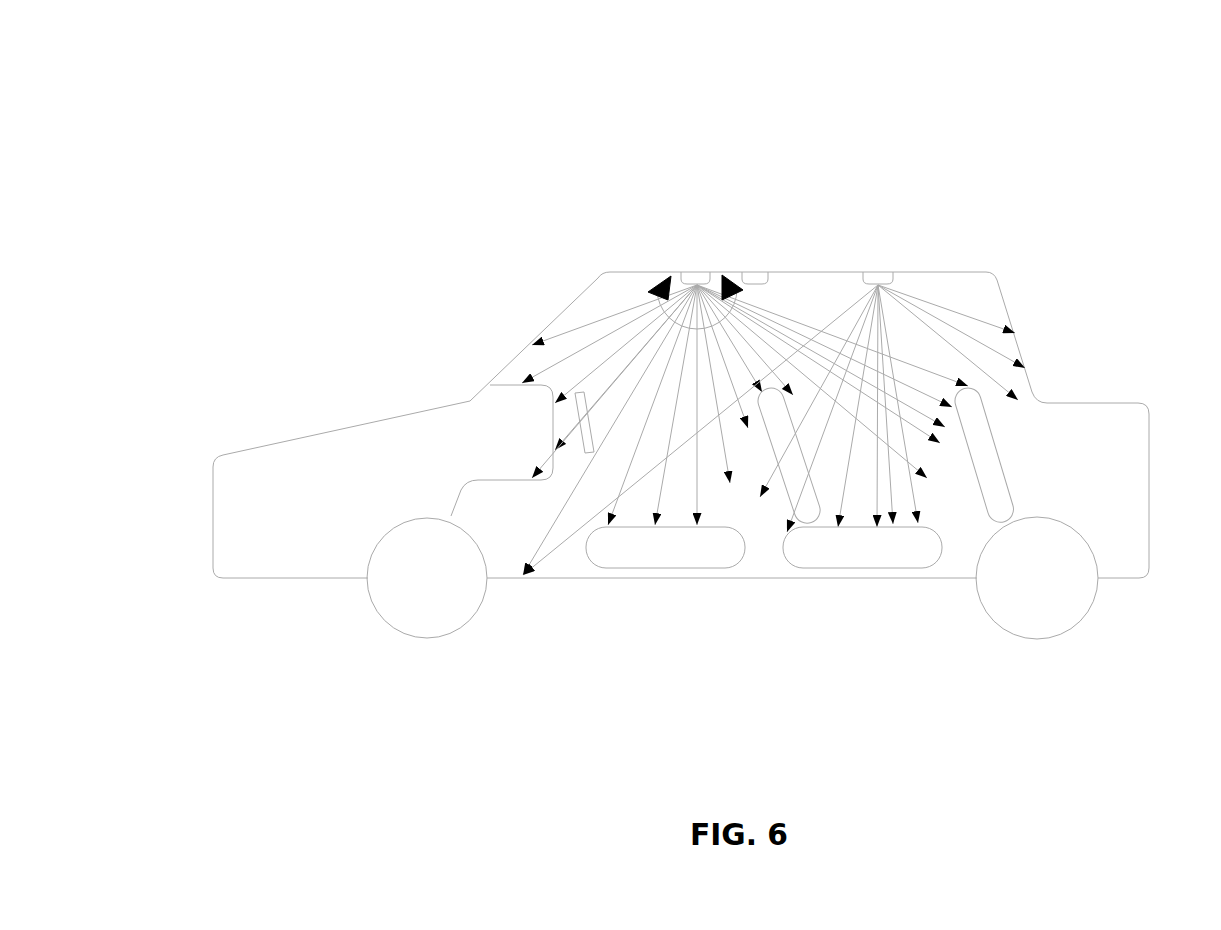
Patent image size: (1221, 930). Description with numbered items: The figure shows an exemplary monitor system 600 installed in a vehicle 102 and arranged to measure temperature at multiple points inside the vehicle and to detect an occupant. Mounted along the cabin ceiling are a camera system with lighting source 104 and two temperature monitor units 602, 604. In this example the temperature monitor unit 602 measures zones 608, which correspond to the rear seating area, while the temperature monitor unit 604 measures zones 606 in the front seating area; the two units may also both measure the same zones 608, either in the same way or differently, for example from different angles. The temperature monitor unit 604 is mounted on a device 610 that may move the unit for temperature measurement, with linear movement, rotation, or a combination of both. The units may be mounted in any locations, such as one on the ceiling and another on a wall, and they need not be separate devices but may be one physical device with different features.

The vehicle 102 is at (343, 465).
The camera system with lighting source 104 is at (758, 270).
The system 600 is at (1094, 66).
The temperature monitor unit 602 is at (878, 287).
The temperature monitor unit 604 is at (698, 282).
The zones 606 is at (656, 527).
The zones 608 is at (837, 527).
The device 610 is at (660, 289).